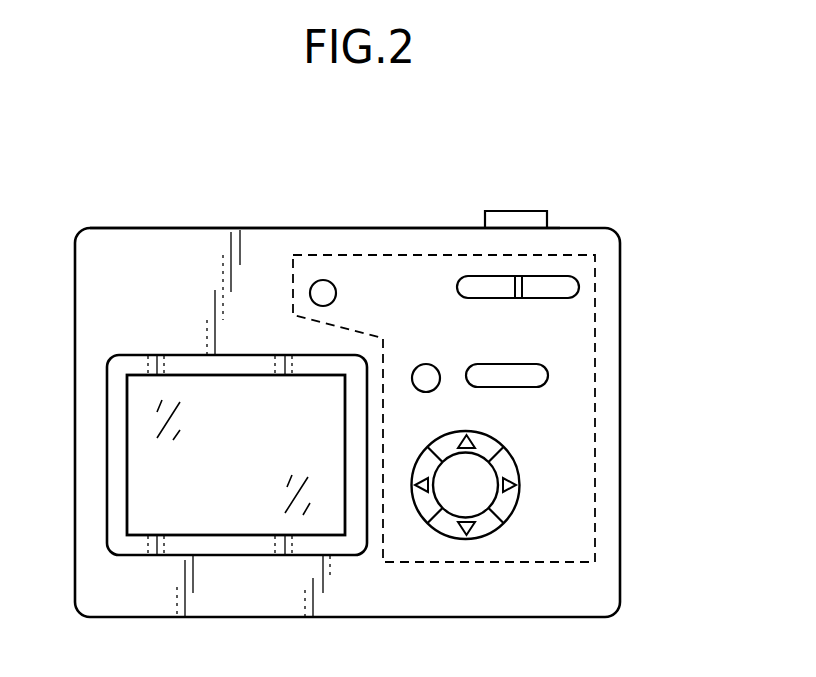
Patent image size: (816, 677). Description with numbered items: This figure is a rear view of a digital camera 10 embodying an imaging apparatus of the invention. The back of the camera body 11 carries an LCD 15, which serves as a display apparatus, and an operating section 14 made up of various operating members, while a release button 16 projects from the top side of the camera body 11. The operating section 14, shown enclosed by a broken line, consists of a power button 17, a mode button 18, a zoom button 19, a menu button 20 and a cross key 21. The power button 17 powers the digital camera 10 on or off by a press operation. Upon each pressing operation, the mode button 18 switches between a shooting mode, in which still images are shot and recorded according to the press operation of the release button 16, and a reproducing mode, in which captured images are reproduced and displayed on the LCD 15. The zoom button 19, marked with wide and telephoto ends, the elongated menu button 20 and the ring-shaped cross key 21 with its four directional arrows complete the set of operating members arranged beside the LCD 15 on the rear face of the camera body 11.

The digital camera 10 is at (107, 214).
The camera body 11 is at (164, 227).
The operating section 14 is at (597, 533).
The LCD 15 is at (194, 388).
The release button 16 is at (515, 211).
The power button 17 is at (337, 293).
The mode button 18 is at (427, 364).
The zoom button 19 is at (552, 277).
The menu button 20 is at (518, 387).
The cross key 21 is at (520, 465).